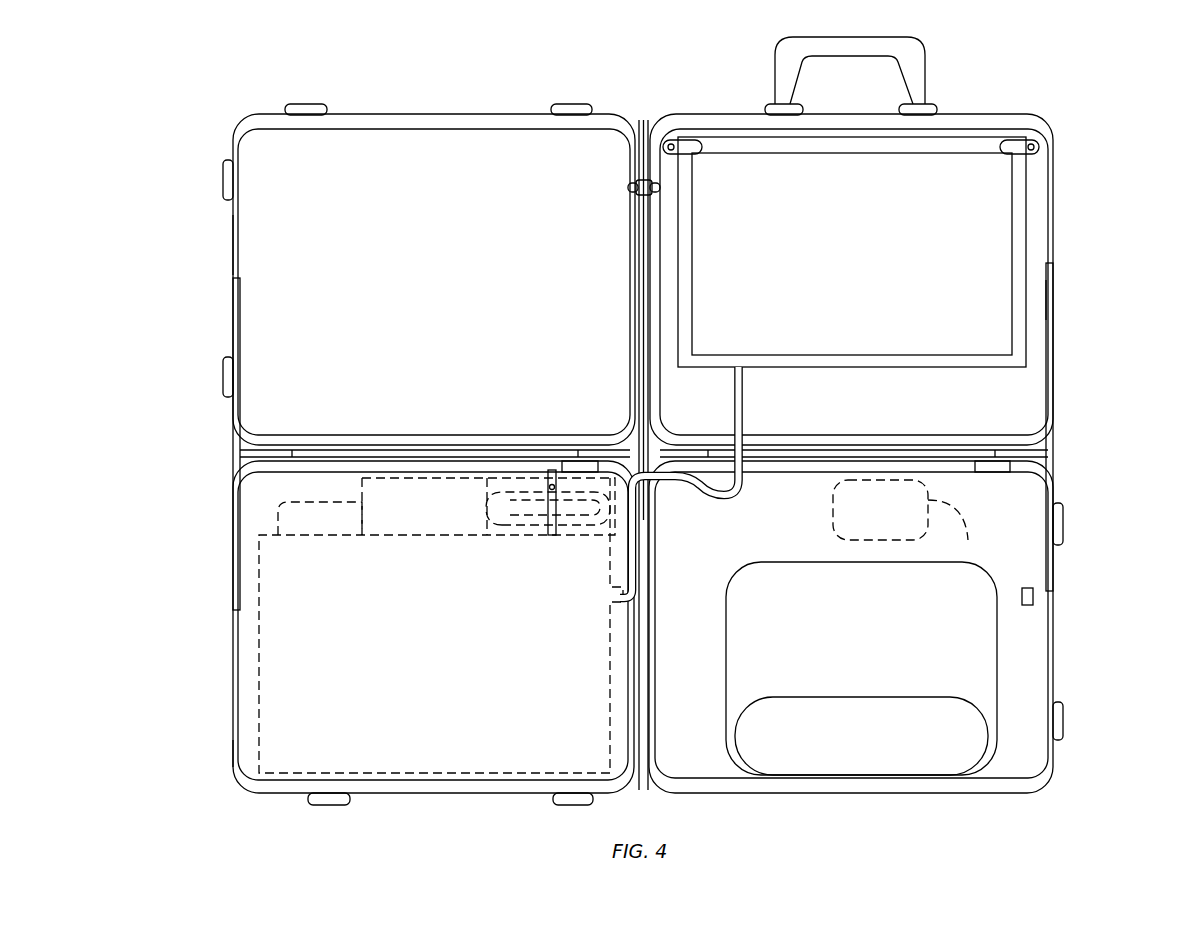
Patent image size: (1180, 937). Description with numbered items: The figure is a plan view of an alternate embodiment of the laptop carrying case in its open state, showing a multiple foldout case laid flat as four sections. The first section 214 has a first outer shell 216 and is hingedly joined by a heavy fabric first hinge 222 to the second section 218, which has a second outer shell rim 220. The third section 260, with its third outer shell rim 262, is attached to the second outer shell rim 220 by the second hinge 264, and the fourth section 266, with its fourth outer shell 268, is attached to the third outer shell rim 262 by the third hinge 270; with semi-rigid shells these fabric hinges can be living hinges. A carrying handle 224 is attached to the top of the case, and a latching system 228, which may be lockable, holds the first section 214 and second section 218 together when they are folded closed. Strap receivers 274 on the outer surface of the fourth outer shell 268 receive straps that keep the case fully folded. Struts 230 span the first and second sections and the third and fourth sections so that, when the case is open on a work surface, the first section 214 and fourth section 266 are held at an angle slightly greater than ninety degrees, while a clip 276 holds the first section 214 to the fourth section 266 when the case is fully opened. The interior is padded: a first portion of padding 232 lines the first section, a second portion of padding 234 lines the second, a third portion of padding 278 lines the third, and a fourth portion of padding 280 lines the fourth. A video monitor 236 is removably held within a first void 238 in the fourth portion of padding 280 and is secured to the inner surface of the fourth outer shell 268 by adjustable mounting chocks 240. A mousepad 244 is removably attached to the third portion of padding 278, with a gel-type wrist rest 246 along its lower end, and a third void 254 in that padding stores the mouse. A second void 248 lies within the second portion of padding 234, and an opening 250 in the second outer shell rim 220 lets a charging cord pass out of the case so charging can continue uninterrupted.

The first section 214 is at (413, 118).
The first outer shell 216 is at (232, 245).
The second section 218 is at (235, 700).
The second outer shell rim 220 is at (235, 770).
The first hinge 222 is at (245, 460).
The carrying handle 224 is at (915, 57).
The latching system 228 is at (302, 98).
The strut 230 is at (237, 335).
The first portion of padding 232 is at (470, 150).
The second portion of padding 234 is at (250, 510).
The video monitor 236 is at (985, 210).
The first void 238 is at (1030, 190).
The adjustable mounting chocks 240 is at (682, 147).
The mousepad 244 is at (862, 655).
The gel-type wrist rest 246 is at (937, 745).
The second void 248 is at (498, 485).
The opening 250 is at (550, 480).
The third void 254 is at (930, 500).
The third section 260 is at (1045, 775).
The third outer shell rim 262 is at (1052, 660).
The second hinge 264 is at (645, 720).
The fourth section 266 is at (1055, 135).
The fourth outer shell 268 is at (988, 122).
The third hinge 270 is at (1025, 456).
The strap receivers 274 is at (1065, 523).
The clip 276 is at (640, 180).
The third portion of padding 278 is at (1032, 620).
The fourth portion of padding 280 is at (1040, 300).